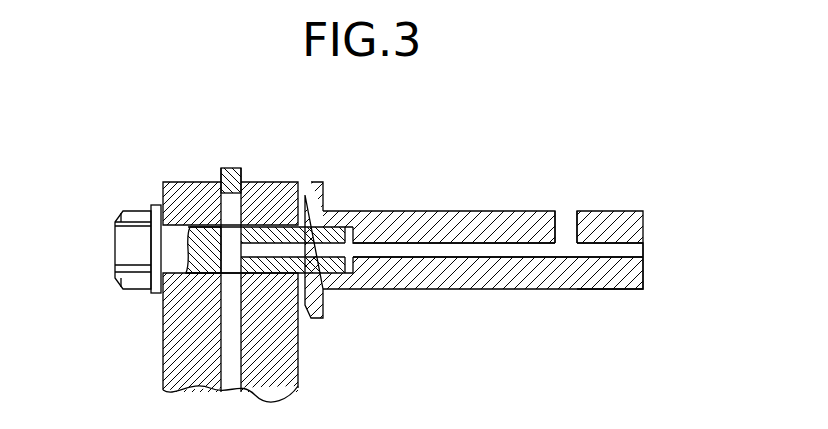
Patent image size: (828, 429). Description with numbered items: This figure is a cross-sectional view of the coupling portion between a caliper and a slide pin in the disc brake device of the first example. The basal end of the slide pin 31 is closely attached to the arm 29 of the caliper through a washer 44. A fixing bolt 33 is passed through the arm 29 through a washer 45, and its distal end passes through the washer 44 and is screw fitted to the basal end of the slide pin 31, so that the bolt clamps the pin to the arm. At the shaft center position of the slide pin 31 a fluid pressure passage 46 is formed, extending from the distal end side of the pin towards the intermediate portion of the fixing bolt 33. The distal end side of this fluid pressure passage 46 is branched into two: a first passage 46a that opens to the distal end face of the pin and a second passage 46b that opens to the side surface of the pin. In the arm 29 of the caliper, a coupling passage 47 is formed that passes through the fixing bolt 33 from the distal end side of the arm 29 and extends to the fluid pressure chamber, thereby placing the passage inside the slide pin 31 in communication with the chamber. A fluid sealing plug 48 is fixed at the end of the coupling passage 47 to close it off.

The arm 29 is at (191, 196).
The slide pin 31 is at (617, 213).
The fixing bolt 33 is at (135, 278).
The washer 44 is at (306, 215).
The washer 45 is at (156, 206).
The fluid pressure passage 46 is at (489, 250).
The first passage 46a is at (607, 250).
The second passage 46b is at (563, 213).
The coupling passage 47 is at (232, 363).
The fluid sealing plug 48 is at (225, 166).